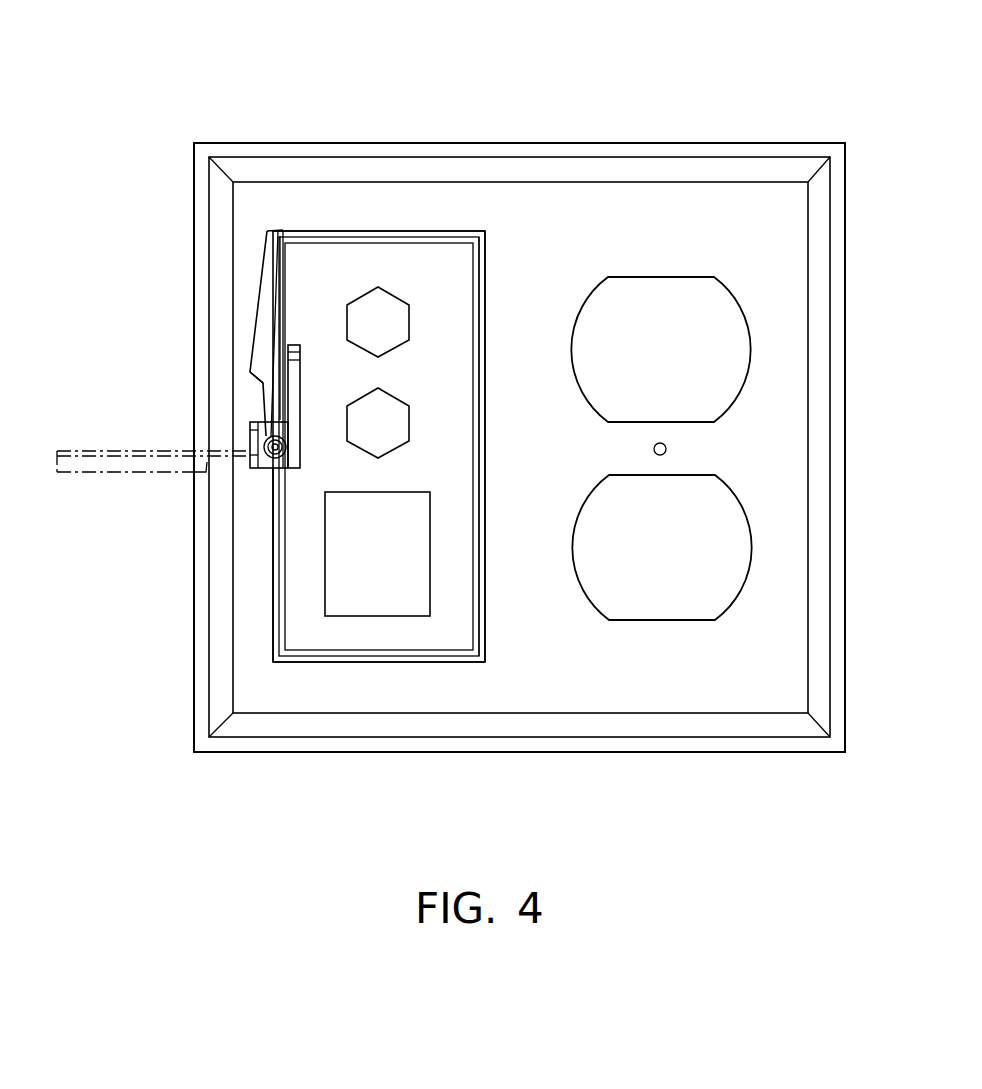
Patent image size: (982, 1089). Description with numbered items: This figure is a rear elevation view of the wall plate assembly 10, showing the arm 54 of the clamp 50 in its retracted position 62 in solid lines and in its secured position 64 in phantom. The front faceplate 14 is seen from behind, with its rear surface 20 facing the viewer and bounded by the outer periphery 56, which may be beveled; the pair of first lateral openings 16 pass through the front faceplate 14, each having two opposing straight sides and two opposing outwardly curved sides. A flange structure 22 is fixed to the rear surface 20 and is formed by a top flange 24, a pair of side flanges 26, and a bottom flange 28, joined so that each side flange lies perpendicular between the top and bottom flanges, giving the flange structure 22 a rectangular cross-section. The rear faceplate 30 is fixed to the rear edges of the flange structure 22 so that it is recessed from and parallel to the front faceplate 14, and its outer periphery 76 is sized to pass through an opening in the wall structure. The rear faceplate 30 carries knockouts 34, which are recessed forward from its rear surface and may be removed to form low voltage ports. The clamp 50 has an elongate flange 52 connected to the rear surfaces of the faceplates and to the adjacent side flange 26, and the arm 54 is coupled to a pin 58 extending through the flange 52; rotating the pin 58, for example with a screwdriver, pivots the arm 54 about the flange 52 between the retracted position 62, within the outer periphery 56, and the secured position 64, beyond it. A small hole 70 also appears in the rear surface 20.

The wall plate assembly 10 is at (589, 128).
The front faceplate 14 is at (293, 128).
The first lateral openings 16 is at (680, 368).
The rear surface 20 is at (714, 249).
The flange structure 22 is at (361, 215).
The top flange 24 is at (450, 231).
The side flanges 26 is at (272, 600).
The bottom flange 28 is at (323, 662).
The rear faceplate 30 is at (330, 292).
The knockouts 34 is at (397, 339).
The clamp 50 is at (314, 381).
The elongate flange 52 is at (300, 450).
The arm 54 is at (260, 294).
The outer periphery 56 is at (378, 144).
The pin 58 is at (270, 466).
The retracted position 62 is at (262, 280).
The secured position 64 is at (100, 474).
The screw opening 70 is at (667, 449).
The outer periphery 76 is at (487, 578).